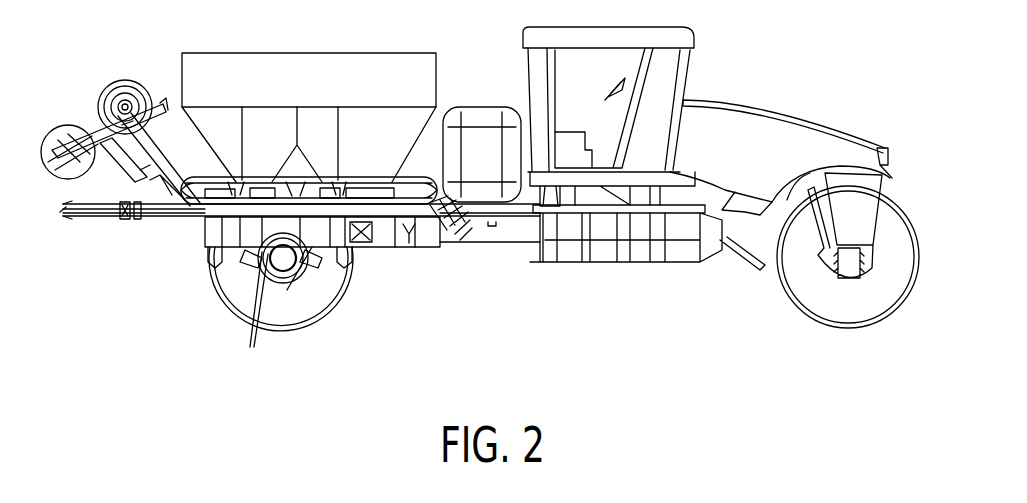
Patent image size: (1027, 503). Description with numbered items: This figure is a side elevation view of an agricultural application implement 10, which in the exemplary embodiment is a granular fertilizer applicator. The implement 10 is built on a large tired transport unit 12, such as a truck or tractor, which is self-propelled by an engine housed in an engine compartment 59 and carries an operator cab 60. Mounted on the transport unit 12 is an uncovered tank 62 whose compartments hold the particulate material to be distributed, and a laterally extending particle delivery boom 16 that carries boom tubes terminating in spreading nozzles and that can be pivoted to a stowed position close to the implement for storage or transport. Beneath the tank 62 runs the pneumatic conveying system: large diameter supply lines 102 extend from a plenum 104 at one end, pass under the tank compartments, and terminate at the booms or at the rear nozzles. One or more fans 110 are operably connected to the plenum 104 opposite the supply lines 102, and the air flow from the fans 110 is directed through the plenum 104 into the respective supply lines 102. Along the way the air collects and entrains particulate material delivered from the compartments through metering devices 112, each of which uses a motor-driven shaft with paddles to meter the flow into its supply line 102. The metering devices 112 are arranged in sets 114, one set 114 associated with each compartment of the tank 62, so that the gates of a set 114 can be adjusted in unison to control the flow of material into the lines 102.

The agricultural application implement 10 is at (570, 300).
The transport unit 12 is at (708, 96).
The particle delivery boom 16 is at (467, 249).
The engine compartment 59 is at (812, 115).
The operator cab 60 is at (612, 27).
The tank 62 is at (284, 40).
The supply line 102 is at (157, 212).
The plenum 104 is at (112, 205).
The fan 110 is at (95, 101).
The metering device 112 is at (378, 243).
The set of metering devices 114 is at (214, 272).